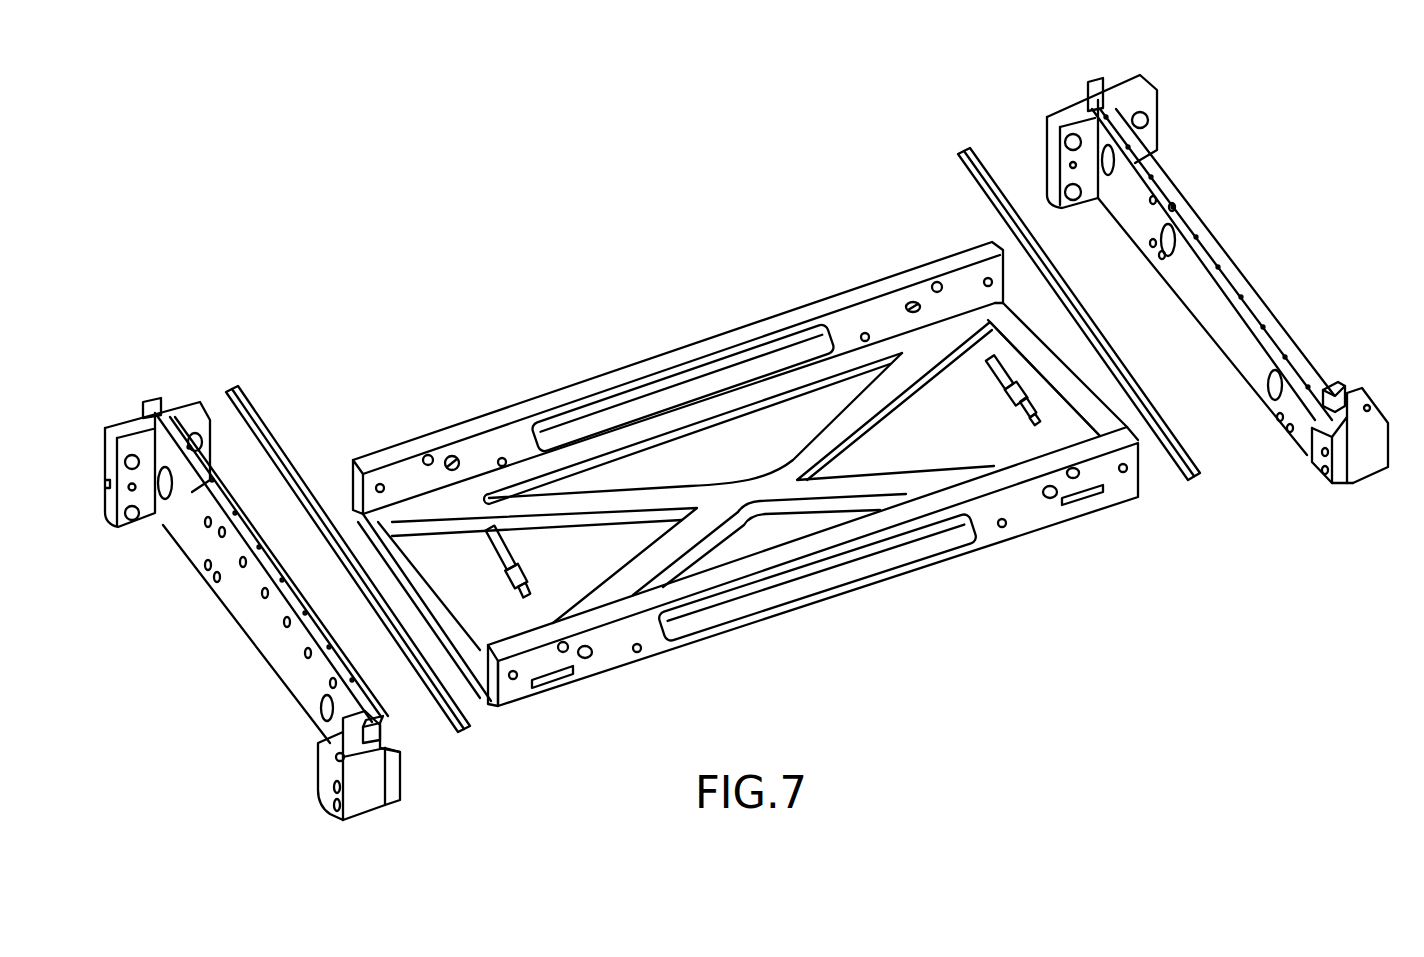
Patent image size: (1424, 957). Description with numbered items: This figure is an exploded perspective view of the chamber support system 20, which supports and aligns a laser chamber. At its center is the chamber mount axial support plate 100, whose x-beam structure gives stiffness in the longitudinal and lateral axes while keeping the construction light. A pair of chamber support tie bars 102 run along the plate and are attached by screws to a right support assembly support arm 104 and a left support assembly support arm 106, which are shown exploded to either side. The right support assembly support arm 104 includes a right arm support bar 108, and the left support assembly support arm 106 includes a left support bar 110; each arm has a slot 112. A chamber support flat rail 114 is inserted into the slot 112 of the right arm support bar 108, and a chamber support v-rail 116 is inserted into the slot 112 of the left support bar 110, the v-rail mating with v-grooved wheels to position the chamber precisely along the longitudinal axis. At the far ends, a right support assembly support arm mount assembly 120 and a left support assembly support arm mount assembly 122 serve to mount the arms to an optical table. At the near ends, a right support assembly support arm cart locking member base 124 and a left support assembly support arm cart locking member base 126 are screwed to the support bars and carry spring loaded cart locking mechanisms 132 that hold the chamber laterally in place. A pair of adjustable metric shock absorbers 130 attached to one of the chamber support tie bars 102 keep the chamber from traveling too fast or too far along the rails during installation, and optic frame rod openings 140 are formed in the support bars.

The chamber support system 20 is at (628, 250).
The chamber mount axial support plate 100 is at (808, 432).
The chamber support tie bars 102 is at (597, 384).
The right support assembly support arm 104 is at (1362, 469).
The left support assembly support arm 106 is at (381, 797).
The right arm support bar 108 is at (1320, 462).
The left support bar 110 is at (285, 662).
The slot 112 is at (1262, 350).
The chamber support flat rail 114 is at (1196, 488).
The chamber support v-rail 116 is at (478, 734).
The right support assembly support arm mount assembly 120 is at (1028, 107).
The left support assembly support arm mount assembly 122 is at (118, 402).
The right support assembly support arm cart locking member base 124 is at (1380, 466).
The left support assembly support arm cart locking member base 126 is at (343, 814).
The adjustable metric shock absorbers 130 is at (498, 544).
The spring loaded cart locking mechanisms 132 is at (372, 735).
The optic frame rod openings 140 is at (167, 494).